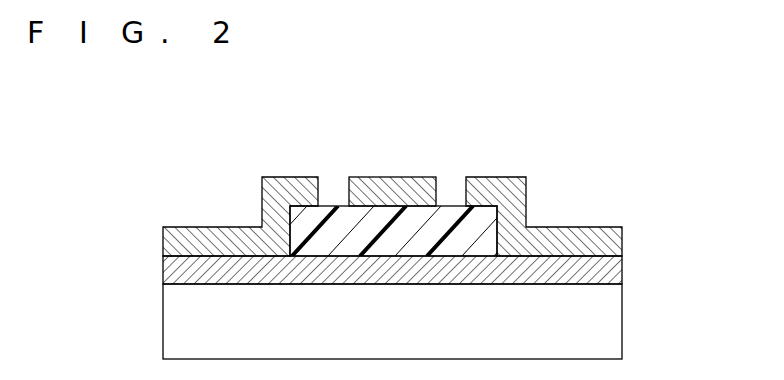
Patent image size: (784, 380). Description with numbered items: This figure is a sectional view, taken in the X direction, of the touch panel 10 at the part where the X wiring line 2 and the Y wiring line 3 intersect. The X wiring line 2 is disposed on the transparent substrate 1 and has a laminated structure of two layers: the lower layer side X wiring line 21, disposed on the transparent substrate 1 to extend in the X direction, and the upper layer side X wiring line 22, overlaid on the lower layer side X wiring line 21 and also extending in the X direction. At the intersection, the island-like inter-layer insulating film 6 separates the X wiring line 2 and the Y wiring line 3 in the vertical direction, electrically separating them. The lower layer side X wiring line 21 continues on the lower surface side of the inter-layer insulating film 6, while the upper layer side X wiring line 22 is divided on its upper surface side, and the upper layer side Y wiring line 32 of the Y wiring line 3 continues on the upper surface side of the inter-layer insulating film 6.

The transparent substrate 1 is at (607, 326).
The X wiring line 2 is at (440, 233).
The lower layer side X wiring line 21 is at (622, 275).
The upper layer side X wiring line 22 is at (623, 240).
The Y wiring line 3 is at (392, 145).
The upper layer side Y wiring line 32 is at (393, 180).
The inter-layer insulating film 6 is at (330, 238).
The touch panel 10 is at (591, 149).